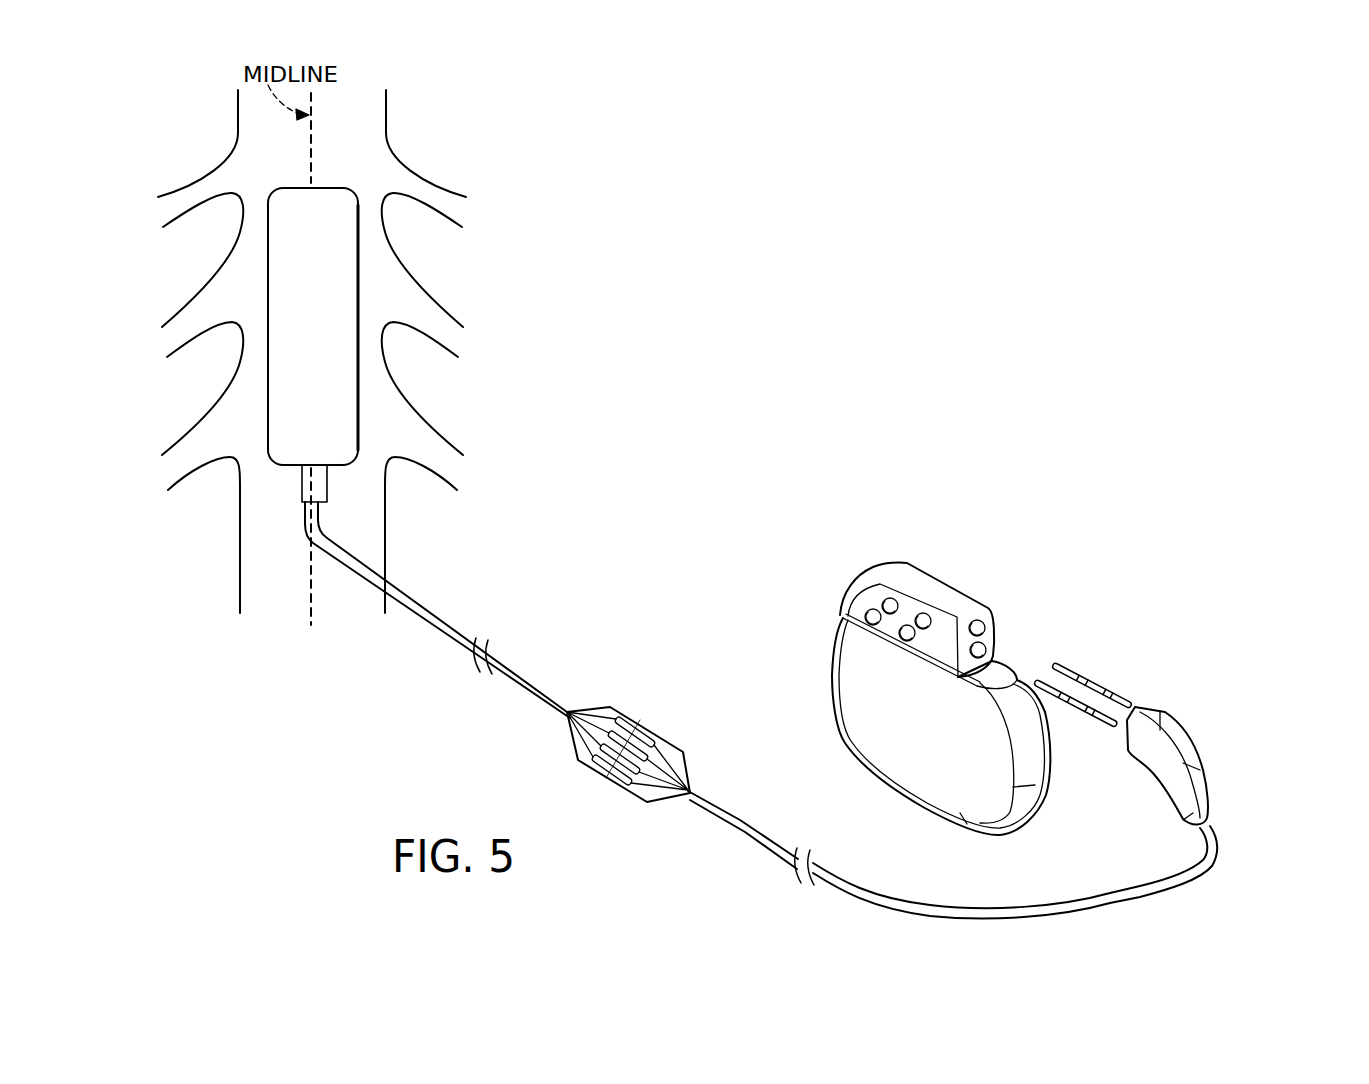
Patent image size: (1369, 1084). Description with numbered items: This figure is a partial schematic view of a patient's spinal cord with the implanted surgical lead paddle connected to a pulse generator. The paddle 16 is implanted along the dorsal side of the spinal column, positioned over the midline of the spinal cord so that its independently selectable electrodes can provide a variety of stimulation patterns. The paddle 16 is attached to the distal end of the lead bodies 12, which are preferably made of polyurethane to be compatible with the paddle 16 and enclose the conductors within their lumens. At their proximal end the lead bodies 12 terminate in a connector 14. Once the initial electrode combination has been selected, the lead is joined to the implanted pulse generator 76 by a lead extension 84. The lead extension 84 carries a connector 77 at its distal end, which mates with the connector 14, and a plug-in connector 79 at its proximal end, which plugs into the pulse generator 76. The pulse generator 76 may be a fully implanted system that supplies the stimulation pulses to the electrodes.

The lead body 12 is at (403, 592).
The connector 14 is at (618, 712).
The paddle 16 is at (357, 279).
The pulse generator 76 is at (835, 630).
The connector 77 is at (675, 750).
The plug-in connector 79 is at (1183, 730).
The lead extension 84 is at (1051, 911).